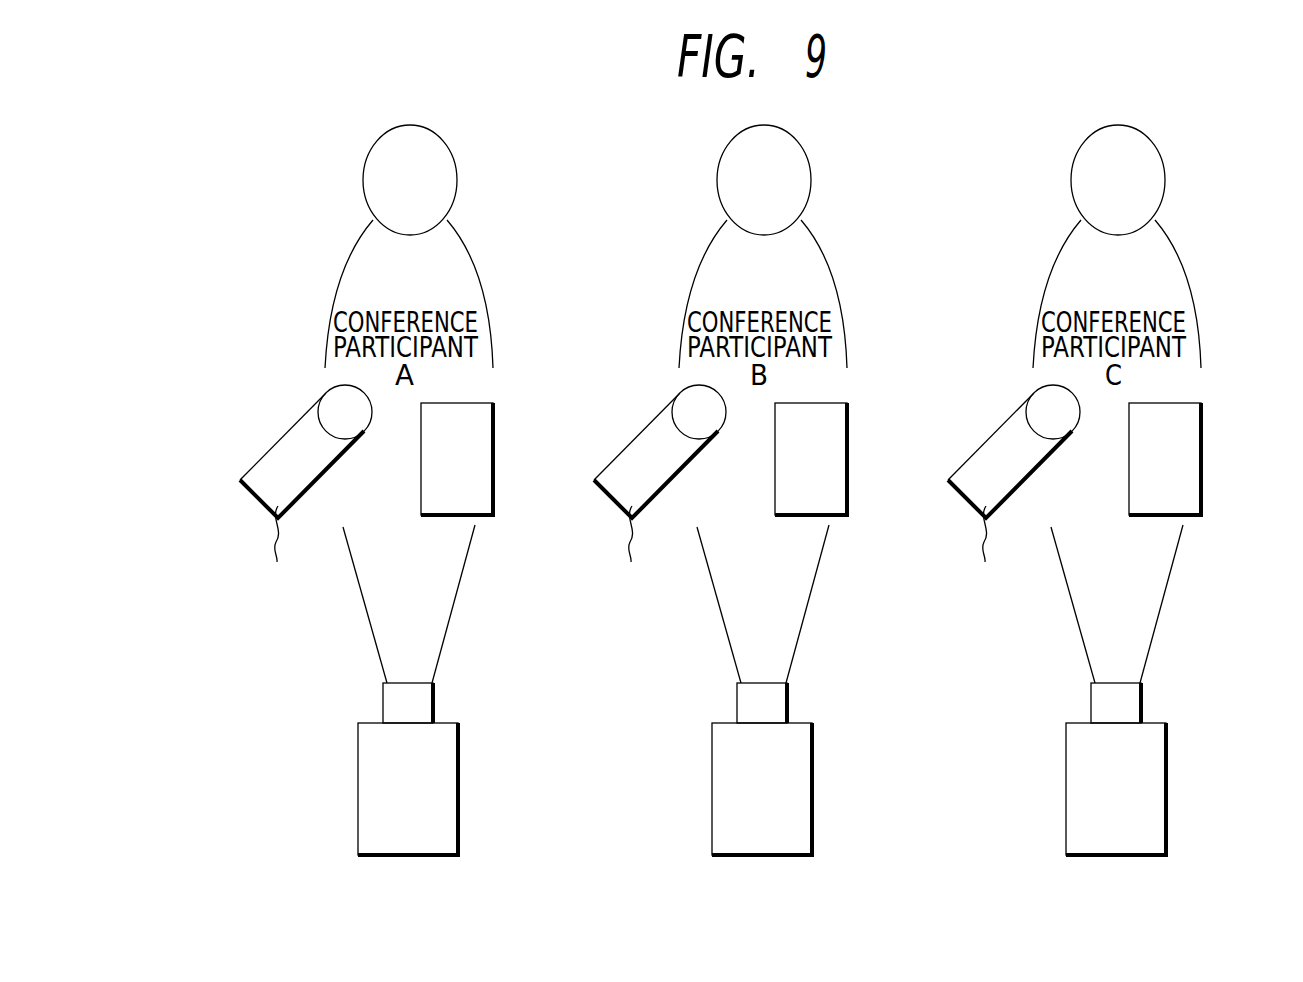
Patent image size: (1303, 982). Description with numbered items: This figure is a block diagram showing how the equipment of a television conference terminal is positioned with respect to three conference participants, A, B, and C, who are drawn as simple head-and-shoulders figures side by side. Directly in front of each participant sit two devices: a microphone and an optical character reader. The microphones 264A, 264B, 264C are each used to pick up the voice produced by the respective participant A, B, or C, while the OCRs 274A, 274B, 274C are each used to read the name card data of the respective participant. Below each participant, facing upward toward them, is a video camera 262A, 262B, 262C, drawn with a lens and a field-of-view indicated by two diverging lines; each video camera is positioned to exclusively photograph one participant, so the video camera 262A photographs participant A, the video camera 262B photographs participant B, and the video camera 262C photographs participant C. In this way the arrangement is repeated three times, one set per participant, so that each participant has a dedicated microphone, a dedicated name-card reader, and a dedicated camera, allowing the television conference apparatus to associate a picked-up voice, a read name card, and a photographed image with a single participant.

The video camera 262A is at (408, 845).
The video camera 262B is at (762, 845).
The video camera 262C is at (1116, 845).
The microphone 264A is at (300, 434).
The microphone 264B is at (654, 434).
The microphone 264C is at (1008, 434).
The optical character reader (OCR) 274A is at (485, 435).
The optical character reader (OCR) 274B is at (839, 435).
The optical character reader (OCR) 274C is at (1193, 435).